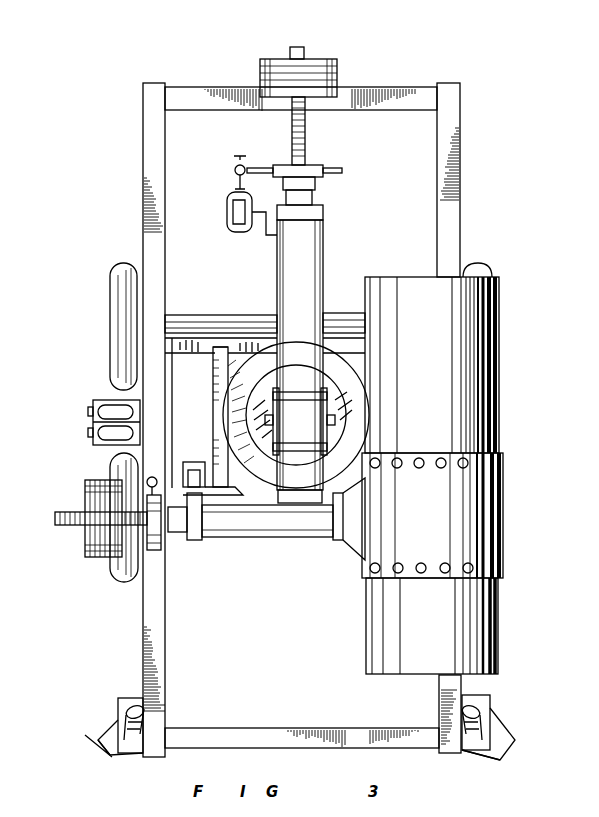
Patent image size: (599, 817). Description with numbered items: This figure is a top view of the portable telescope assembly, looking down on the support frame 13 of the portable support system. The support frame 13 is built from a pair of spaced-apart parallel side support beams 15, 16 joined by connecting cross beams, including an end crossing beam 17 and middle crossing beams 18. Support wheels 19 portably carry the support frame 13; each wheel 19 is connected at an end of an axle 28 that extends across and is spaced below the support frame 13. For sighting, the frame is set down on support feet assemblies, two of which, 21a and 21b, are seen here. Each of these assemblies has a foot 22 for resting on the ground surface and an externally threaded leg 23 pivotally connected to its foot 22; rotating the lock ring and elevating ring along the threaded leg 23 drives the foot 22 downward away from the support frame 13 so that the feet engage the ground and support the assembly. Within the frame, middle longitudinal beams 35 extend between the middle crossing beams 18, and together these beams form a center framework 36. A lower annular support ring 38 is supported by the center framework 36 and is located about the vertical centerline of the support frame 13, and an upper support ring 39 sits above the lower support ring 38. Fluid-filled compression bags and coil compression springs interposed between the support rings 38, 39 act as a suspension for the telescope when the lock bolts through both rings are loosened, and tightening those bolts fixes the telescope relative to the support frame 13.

The support frame 13 is at (143, 157).
The side support beam 15 is at (143, 207).
The side support beam 16 is at (460, 188).
The end crossing beam 17 is at (355, 88).
The middle crossing beam 18 is at (205, 356).
The support wheel 19 is at (112, 285).
The support foot assembly 21a is at (118, 712).
The support foot assembly 21b is at (500, 725).
The foot 22 is at (100, 745).
The externally threaded leg 23 is at (138, 706).
The axle 28 is at (240, 315).
The middle longitudinal beam 35 is at (213, 393).
The center framework 36 is at (205, 391).
The lower annular support ring 38 is at (232, 437).
The upper support ring 39 is at (340, 372).